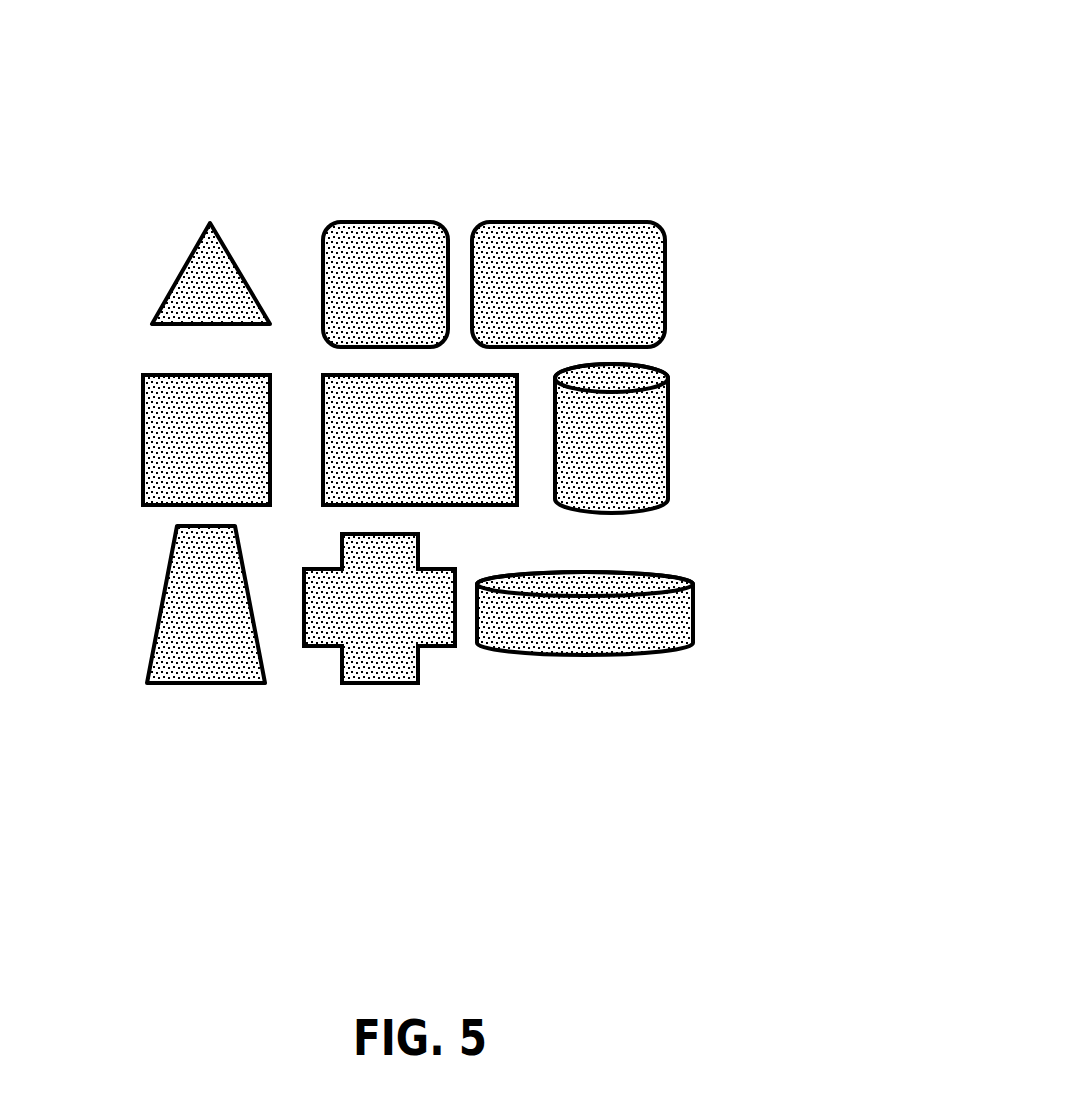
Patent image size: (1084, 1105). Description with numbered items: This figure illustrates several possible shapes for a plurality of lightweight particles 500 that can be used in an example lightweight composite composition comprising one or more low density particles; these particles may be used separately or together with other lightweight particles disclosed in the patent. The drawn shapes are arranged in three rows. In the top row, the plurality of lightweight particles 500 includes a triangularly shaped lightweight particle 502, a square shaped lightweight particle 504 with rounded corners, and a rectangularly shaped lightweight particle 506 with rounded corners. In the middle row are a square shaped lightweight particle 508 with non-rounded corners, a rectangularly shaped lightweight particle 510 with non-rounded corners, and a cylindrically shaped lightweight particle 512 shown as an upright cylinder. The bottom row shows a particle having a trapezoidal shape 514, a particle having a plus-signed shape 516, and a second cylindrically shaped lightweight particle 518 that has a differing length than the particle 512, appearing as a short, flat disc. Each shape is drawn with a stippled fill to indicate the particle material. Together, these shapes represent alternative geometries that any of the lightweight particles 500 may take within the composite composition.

The plurality of lightweight particles 500 is at (658, 154).
The triangularly shaped lightweight particle 502 is at (189, 268).
The square shaped lightweight particle with rounded corners 504 is at (378, 222).
The rectangularly shaped lightweight particle with rounded corners 506 is at (545, 222).
The square shaped lightweight particle with non-rounded corners 508 is at (143, 428).
The rectangularly shaped lightweight particle with non-rounded corners 510 is at (518, 387).
The cylindrically shaped lightweight particle 512 is at (667, 445).
The trapezoidal shape 514 is at (160, 622).
The plus-signed shape 516 is at (352, 683).
The cylindrically shaped lightweight particle with differing length 518 is at (594, 655).